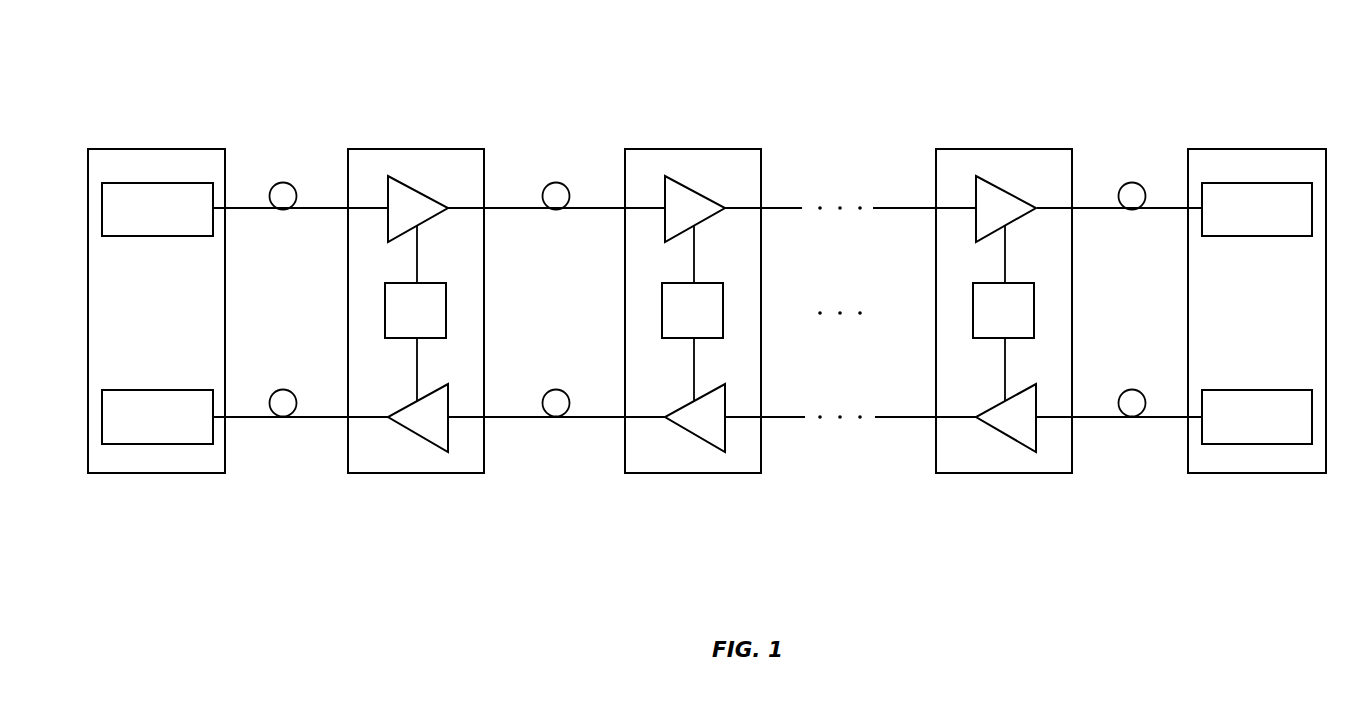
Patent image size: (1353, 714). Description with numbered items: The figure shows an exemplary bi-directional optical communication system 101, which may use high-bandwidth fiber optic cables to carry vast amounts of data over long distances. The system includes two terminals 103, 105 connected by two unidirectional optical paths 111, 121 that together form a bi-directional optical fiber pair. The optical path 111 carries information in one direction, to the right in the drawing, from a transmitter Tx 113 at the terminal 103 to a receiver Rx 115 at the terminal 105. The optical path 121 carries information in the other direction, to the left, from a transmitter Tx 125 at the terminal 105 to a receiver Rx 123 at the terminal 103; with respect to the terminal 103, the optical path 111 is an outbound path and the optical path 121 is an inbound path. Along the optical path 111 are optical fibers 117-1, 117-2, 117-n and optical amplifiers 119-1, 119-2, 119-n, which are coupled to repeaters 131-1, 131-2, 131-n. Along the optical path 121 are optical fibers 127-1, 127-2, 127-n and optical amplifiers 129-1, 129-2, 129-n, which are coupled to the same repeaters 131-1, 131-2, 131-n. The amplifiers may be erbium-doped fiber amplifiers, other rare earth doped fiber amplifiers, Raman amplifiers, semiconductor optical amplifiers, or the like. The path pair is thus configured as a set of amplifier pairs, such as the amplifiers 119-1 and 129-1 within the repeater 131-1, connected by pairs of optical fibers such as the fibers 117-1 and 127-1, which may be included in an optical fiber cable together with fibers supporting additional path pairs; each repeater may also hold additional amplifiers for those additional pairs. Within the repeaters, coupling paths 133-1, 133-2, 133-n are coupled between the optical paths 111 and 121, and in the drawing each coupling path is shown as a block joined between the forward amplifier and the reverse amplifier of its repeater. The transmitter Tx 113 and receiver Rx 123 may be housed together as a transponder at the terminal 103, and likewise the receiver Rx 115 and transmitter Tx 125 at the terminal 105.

The bi-directional optical communication system 101 is at (858, 544).
The terminal 103 is at (136, 149).
The terminal 105 is at (1238, 149).
The optical path 111 is at (542, 100).
The transmitter Tx 113 is at (185, 183).
The receiver Rx 115 is at (1285, 183).
The optical fiber 117-1 is at (253, 210).
The optical fiber 117-2 is at (530, 210).
The optical fiber 117-n is at (1103, 210).
The optical amplifier 119-1 is at (417, 190).
The optical amplifier 119-2 is at (712, 175).
The optical amplifier 119-n is at (1023, 175).
The optical path 121 is at (520, 514).
The receiver Rx 123 is at (160, 445).
The transmitter Tx 125 is at (1250, 445).
The optical fiber 127-1 is at (253, 419).
The optical fiber 127-2 is at (530, 419).
The optical fiber 127-n is at (1103, 419).
The optical amplifier 129-1 is at (420, 435).
The optical amplifier 129-2 is at (690, 453).
The optical amplifier 129-n is at (1001, 453).
The repeater 131-1 is at (401, 149).
The repeater 131-2 is at (657, 316).
The repeater 131-n is at (967, 316).
The coupling path 133-1 is at (385, 313).
The coupling path 133-2 is at (638, 316).
The coupling path 133-n is at (948, 316).